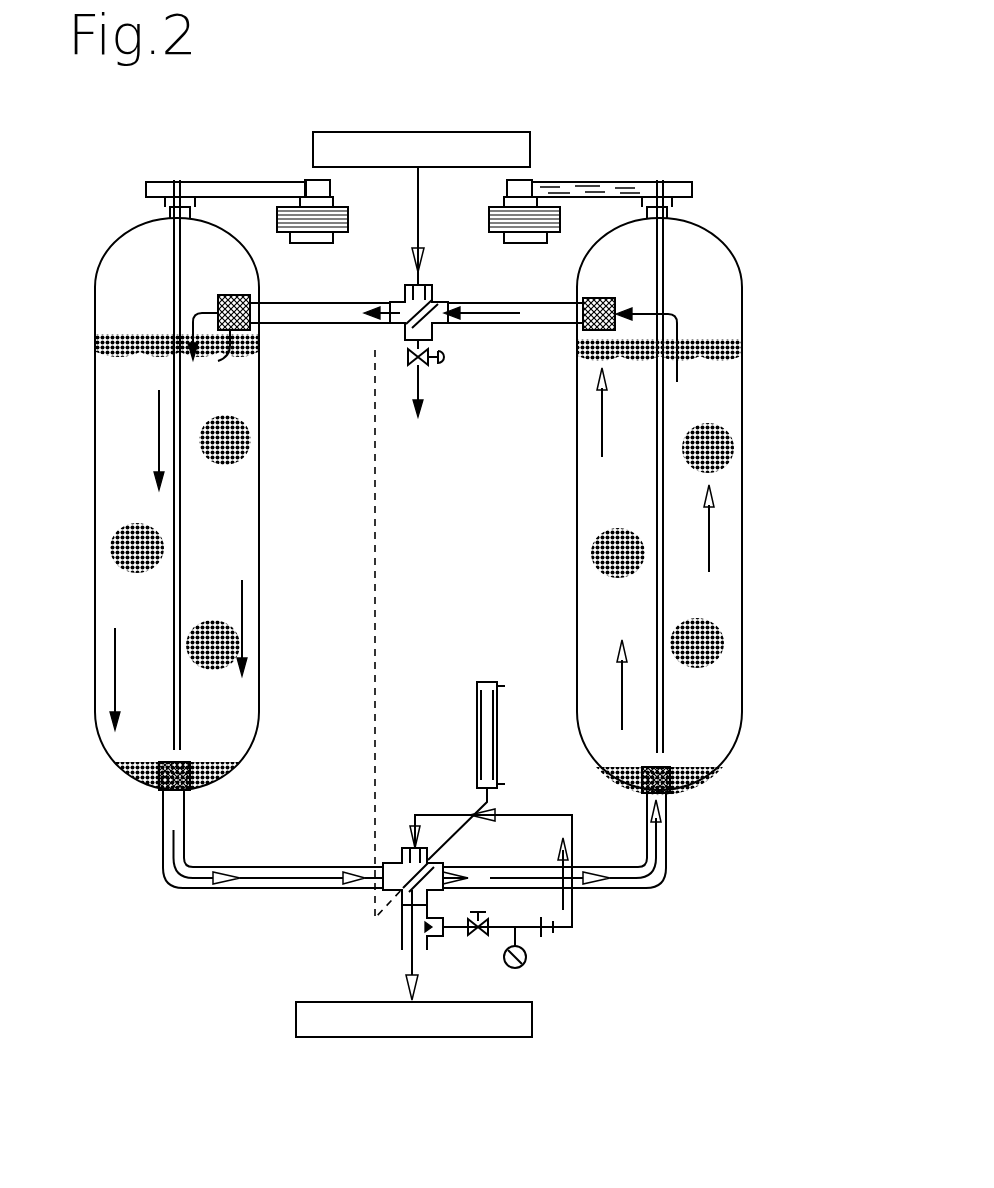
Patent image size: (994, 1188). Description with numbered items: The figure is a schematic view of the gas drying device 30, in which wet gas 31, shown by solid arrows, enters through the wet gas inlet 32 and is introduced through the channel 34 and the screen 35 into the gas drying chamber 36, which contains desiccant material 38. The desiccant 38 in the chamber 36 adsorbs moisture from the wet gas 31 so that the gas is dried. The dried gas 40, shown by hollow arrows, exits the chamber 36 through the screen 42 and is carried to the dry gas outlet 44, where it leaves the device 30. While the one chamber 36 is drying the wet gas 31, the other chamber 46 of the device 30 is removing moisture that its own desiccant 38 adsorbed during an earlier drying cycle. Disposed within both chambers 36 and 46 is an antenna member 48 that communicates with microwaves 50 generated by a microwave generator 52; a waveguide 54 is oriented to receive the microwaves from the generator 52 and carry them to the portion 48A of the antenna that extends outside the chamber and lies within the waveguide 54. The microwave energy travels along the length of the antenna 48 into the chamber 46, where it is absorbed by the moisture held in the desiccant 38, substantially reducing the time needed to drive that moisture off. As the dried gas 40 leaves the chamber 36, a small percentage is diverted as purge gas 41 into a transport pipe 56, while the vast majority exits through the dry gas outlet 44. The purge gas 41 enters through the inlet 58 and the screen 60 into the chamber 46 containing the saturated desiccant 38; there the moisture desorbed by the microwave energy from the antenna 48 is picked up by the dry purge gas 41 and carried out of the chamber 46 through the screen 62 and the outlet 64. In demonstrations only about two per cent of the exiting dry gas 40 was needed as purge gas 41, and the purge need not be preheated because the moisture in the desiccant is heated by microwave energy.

The gas drying device 30 is at (484, 86).
The wet gas 31 is at (200, 310).
The wet gas inlet 32 is at (420, 283).
The channel 34 is at (330, 303).
The screen 35 is at (218, 360).
The gas drying chamber 36 is at (95, 548).
The desiccant material 38 is at (100, 338).
The dried gas 40 is at (190, 865).
The purge gas 41 is at (710, 535).
The screen 42 is at (160, 790).
The dry gas outlet 44 is at (405, 945).
The other chamber 46 is at (745, 448).
The antenna member 48 is at (180, 575).
The antenna portion 48A is at (176, 182).
The microwaves 50 is at (565, 183).
The microwave generator 52 is at (322, 243).
The waveguide 54 is at (265, 182).
The transport pipe 56 is at (430, 940).
The inlet 58 is at (665, 800).
The screen 60 is at (680, 775).
The screen 62 is at (585, 298).
The outlet 64 is at (605, 330).